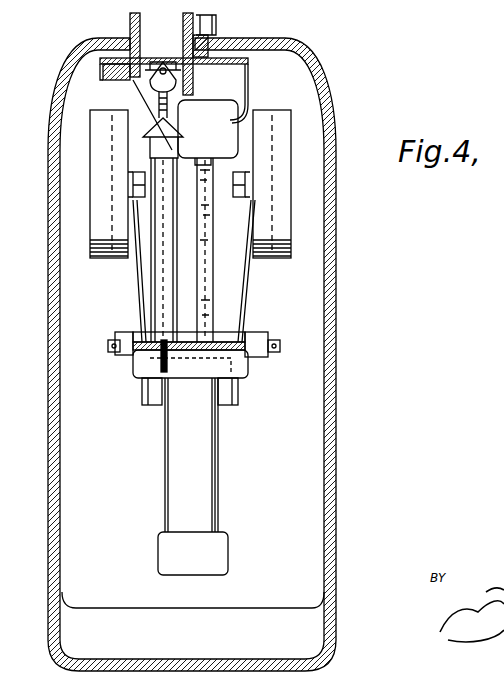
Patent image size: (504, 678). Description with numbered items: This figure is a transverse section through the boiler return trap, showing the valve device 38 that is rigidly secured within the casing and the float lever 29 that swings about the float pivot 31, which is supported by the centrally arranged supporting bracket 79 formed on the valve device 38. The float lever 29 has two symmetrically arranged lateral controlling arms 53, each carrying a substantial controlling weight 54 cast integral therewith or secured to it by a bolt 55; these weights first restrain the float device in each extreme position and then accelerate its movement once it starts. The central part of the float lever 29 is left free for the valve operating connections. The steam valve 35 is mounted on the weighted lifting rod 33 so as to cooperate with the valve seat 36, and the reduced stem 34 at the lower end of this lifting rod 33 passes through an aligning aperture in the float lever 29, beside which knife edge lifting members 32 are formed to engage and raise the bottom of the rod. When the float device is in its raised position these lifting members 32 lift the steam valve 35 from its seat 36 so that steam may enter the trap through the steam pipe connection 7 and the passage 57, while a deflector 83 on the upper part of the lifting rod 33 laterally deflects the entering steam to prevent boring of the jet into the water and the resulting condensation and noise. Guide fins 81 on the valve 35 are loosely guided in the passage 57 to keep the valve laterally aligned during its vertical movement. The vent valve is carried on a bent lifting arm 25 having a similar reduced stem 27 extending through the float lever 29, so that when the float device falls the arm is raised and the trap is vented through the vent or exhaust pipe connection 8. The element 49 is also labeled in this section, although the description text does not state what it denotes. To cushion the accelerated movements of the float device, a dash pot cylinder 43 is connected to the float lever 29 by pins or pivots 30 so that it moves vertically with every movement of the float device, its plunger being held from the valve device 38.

The steam pipe connection 7 is at (130, 20).
The vent or exhaust pipe connection 8 is at (216, 20).
The guide fins 81 is at (152, 66).
The housing 49 is at (302, 74).
The passage 57 is at (200, 82).
The valve device 38 is at (200, 98).
The steam valve 35 is at (150, 83).
The valve seat 36 is at (168, 106).
The deflector 83 is at (178, 150).
The controlling weights 54 is at (92, 214).
The bolt 55 is at (189, 195).
The weighted lifting rod 33 is at (160, 276).
The supporting bracket 79 is at (210, 280).
The controlling arms 53 is at (125, 299).
The lifting members 32 is at (130, 334).
The bent lifting arm 25 is at (228, 318).
The float pivot 31 is at (280, 345).
The float lever 29 is at (138, 360).
The reduced stem 27 is at (222, 367).
The reduced stem 34 is at (170, 372).
The pins or pivots 30 is at (142, 394).
The dash pot cylinder 43 is at (214, 451).